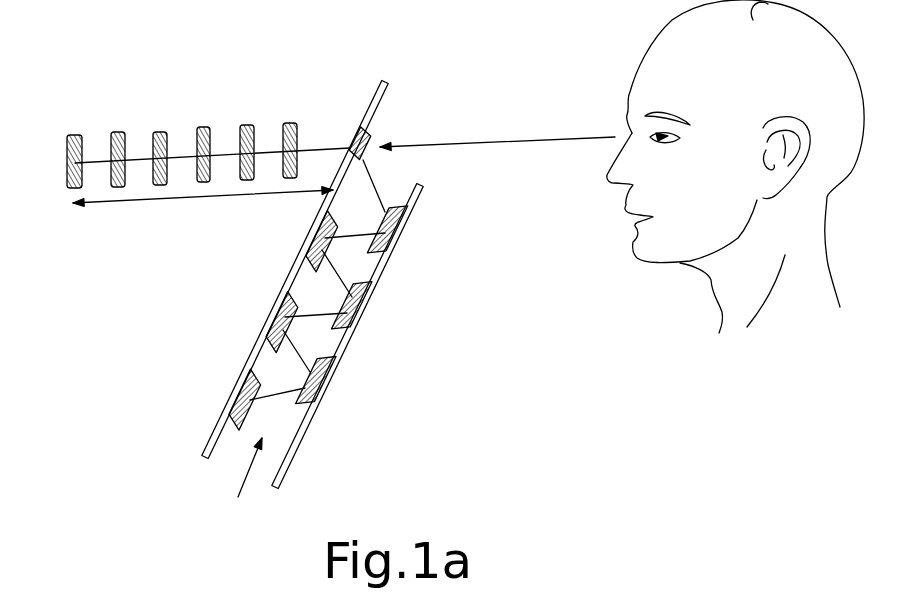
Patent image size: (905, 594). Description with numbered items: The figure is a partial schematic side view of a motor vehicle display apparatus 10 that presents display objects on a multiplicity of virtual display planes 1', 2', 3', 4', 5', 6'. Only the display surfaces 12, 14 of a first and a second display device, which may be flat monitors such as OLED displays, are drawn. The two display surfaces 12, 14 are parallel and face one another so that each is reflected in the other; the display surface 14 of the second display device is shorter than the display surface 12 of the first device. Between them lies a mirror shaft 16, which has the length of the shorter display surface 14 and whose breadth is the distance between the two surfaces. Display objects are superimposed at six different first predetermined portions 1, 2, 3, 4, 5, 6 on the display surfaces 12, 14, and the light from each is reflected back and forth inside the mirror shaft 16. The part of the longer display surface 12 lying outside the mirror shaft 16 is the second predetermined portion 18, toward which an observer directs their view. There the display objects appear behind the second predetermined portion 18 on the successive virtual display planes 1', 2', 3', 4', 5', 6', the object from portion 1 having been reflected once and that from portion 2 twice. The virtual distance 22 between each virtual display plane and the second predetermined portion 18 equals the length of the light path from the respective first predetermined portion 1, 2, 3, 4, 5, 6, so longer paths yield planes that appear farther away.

The motor vehicle display apparatus 10 is at (400, 110).
The display surface of the first display device 12 is at (205, 452).
The display surface of the second display device 14 is at (290, 475).
The mirror shaft 16 is at (241, 486).
The second predetermined portion 18 is at (372, 150).
The virtual distance 22 is at (193, 201).
The first predetermined portion 1 is at (405, 243).
The first predetermined portion 2 is at (299, 241).
The first predetermined portion 3 is at (368, 322).
The first predetermined portion 4 is at (258, 322).
The first predetermined portion 5 is at (329, 403).
The first predetermined portion 6 is at (220, 399).
The virtual display plane 1' is at (301, 118).
The virtual display plane 2' is at (258, 120).
The virtual display plane 3' is at (212, 122).
The virtual display plane 4' is at (170, 125).
The virtual display plane 5' is at (127, 126).
The virtual display plane 6' is at (84, 127).